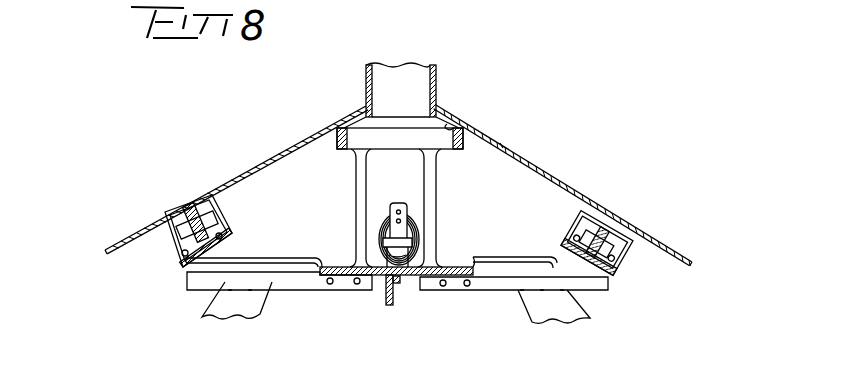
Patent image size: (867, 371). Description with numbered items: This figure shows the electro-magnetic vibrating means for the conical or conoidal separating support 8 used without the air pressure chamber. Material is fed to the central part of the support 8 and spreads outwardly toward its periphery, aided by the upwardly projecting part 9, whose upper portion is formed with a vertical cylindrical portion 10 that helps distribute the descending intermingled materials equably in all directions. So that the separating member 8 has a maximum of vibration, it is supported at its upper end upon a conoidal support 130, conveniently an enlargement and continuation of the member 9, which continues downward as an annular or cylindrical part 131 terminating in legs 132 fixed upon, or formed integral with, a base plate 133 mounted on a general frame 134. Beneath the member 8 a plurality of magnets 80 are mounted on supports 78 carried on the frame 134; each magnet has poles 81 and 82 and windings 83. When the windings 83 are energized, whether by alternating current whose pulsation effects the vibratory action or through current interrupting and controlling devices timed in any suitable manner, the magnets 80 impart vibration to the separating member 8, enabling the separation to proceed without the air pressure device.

The conical support 8 is at (296, 142).
The part projecting upwardly 9 is at (437, 81).
The vertical cylindrical portion 10 is at (408, 95).
The supports 78 is at (232, 265).
The magnets 80 is at (226, 238).
The pole 81 is at (185, 222).
The pole 82 is at (199, 212).
The windings 83 is at (210, 250).
The conoidal support 130 is at (456, 130).
The annular or cylindrical part 131 is at (498, 151).
The legs 132 is at (356, 191).
The base plate 133 is at (440, 291).
The frame 134 is at (266, 303).